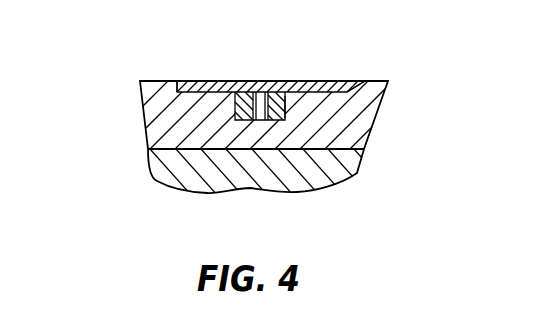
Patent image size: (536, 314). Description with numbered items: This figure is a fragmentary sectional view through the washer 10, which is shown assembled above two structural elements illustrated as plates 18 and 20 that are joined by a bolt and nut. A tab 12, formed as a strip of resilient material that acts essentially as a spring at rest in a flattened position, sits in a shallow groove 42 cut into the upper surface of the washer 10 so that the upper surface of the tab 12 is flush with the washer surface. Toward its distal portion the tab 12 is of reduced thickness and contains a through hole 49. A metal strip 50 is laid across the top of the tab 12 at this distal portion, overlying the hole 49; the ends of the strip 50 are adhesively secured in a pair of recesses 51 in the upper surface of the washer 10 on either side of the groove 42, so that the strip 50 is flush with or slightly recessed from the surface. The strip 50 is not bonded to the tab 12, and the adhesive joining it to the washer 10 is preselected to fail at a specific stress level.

The washer 10 is at (265, 115).
The tab 12 is at (285, 108).
The plate 18 is at (155, 114).
The plate 20 is at (156, 164).
The groove 42 is at (218, 83).
The through hole 49 is at (261, 91).
The metal strip 50 is at (281, 90).
The recesses 51 is at (176, 85).